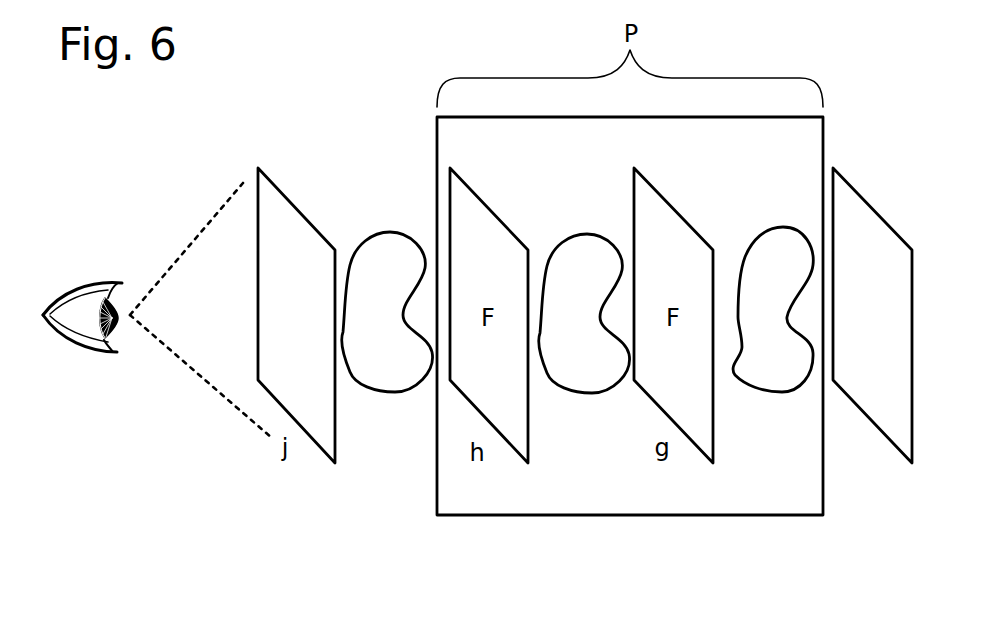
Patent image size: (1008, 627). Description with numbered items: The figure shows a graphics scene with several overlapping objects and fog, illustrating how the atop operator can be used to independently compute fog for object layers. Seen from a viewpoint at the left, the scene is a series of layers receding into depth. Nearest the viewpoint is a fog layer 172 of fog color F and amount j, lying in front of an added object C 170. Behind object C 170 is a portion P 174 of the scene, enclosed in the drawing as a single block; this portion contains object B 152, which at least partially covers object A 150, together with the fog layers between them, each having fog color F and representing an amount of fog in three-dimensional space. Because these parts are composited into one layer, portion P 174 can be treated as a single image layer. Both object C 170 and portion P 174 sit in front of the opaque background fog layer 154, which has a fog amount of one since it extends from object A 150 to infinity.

The fog layer 172 is at (290, 193).
The object C 170 is at (398, 393).
The portion P 174 is at (677, 515).
The object B 152 is at (593, 393).
The object A 150 is at (781, 393).
The background fog layer 154 is at (863, 197).